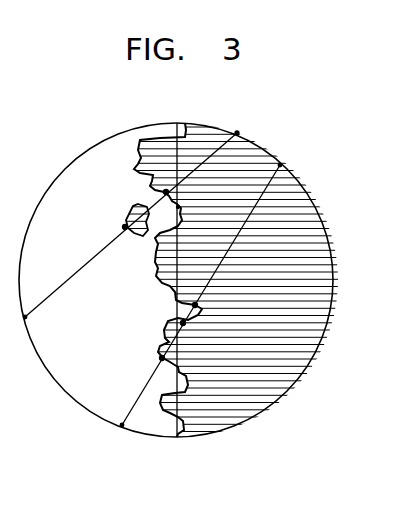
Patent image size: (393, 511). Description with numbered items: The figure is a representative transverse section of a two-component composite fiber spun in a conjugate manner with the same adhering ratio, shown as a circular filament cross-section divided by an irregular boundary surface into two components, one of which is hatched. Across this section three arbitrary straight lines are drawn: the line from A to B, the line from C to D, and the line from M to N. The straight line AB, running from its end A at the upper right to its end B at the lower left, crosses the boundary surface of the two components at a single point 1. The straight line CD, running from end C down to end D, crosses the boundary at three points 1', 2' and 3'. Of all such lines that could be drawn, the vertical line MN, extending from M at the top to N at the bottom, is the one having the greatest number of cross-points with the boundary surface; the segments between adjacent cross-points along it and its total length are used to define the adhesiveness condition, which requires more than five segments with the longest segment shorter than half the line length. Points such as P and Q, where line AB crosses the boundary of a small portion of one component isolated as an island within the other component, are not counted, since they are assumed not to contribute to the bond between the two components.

The end point of straight line MN M is at (178, 183).
The end point of straight line MN N is at (172, 375).
The end point of straight line AB A is at (134, 207).
The end point of straight line AB B is at (14, 325).
The end point of straight line CD C is at (210, 278).
The end point of straight line CD D is at (113, 440).
The cross-point of AB with isolated component boundary P is at (153, 191).
The cross-point of AB with isolated component boundary Q is at (127, 220).
The cross-point of line AB with boundary surface 1 is at (172, 206).
The cross-point of line CD with boundary surface 1' is at (205, 301).
The cross-point of line CD with boundary surface 2' is at (194, 334).
The cross-point of line CD with boundary surface 3' is at (151, 358).